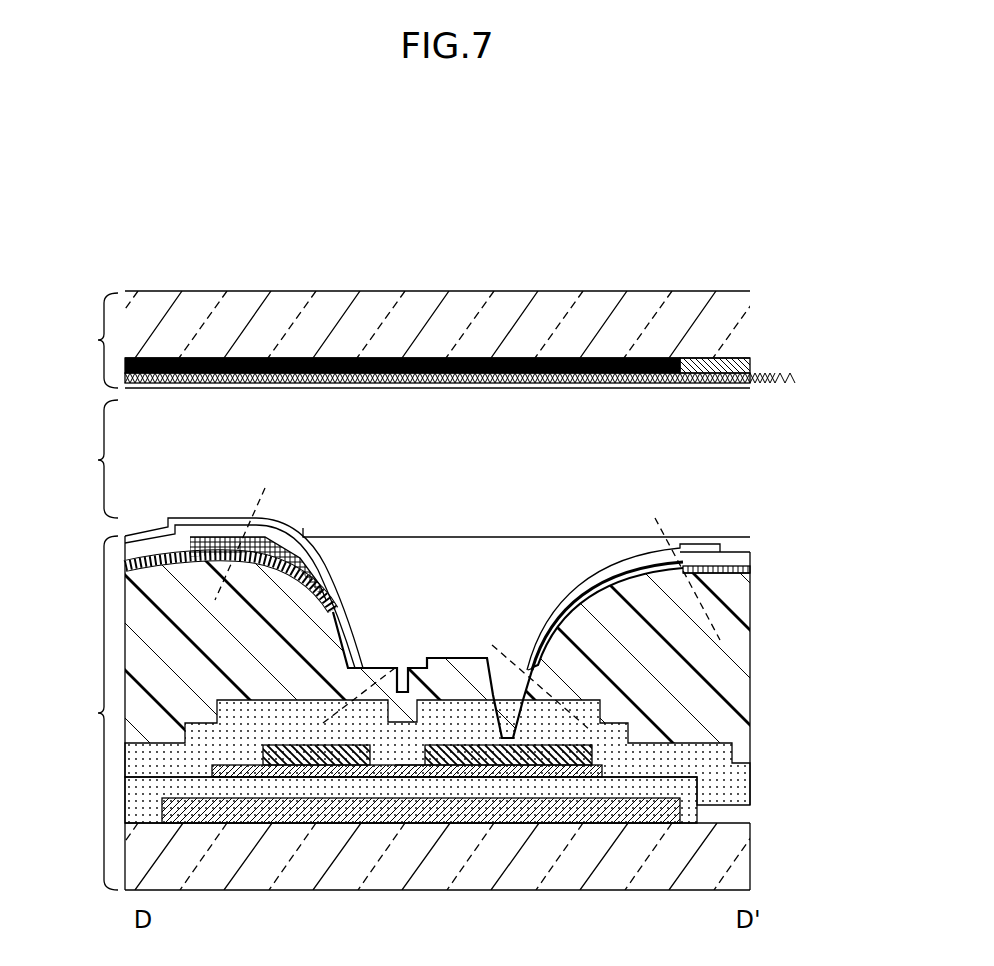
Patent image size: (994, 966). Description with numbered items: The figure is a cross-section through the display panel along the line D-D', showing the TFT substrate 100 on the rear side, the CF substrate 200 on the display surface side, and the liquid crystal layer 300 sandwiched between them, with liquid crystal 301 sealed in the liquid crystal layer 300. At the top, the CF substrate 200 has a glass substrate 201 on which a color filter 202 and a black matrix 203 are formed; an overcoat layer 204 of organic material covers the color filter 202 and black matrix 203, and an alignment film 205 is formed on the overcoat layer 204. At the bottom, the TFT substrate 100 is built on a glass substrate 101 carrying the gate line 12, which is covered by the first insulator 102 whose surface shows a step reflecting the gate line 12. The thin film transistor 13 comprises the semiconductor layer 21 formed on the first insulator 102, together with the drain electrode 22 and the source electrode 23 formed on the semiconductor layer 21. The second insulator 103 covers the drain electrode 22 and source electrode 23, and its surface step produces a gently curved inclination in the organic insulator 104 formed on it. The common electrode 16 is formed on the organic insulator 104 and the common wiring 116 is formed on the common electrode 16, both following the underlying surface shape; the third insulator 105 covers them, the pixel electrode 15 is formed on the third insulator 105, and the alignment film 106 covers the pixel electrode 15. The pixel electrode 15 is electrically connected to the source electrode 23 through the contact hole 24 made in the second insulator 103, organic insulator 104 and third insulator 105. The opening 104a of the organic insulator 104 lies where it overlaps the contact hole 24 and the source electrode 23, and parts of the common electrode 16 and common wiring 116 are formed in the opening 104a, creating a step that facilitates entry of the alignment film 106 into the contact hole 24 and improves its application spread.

The CF substrate 200 is at (82, 340).
The liquid crystal layer 300 is at (80, 459).
The TFT substrate 100 is at (82, 713).
The glass substrate 201 is at (752, 291).
The color filter 202 is at (740, 358).
The black matrix 203 is at (621, 358).
The overcoat layer 204 is at (752, 365).
The alignment film 205 is at (752, 390).
The liquid crystal 301 is at (745, 480).
The third insulator 105 is at (752, 553).
The alignment film 106 is at (545, 546).
The organic insulator 104 is at (740, 707).
The opening 104a is at (560, 622).
The pixel electrode 15 is at (133, 538).
The common electrode 16 is at (177, 553).
The common wiring 116 is at (290, 553).
The contact hole 24 is at (585, 628).
The second insulator 103 is at (740, 787).
The first insulator 102 is at (740, 815).
The glass substrate 101 is at (740, 862).
The gate line 12 is at (607, 815).
The thin film transistor 13 is at (490, 826).
The semiconductor layer 21 is at (413, 772).
The drain electrode 22 is at (363, 762).
The source electrode 23 is at (540, 768).